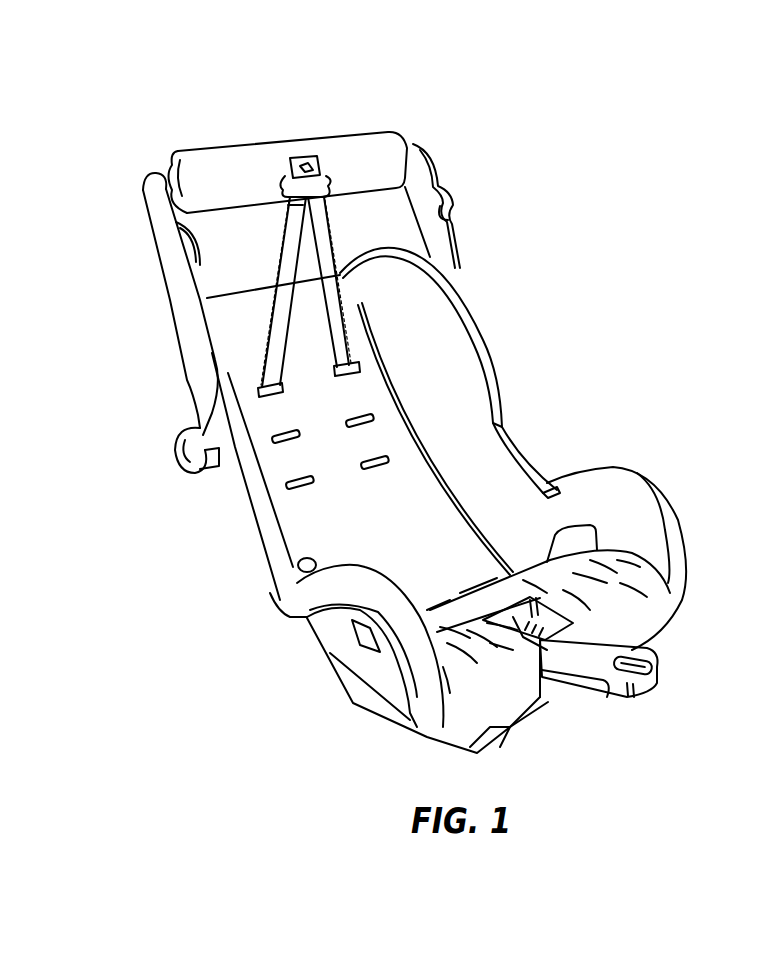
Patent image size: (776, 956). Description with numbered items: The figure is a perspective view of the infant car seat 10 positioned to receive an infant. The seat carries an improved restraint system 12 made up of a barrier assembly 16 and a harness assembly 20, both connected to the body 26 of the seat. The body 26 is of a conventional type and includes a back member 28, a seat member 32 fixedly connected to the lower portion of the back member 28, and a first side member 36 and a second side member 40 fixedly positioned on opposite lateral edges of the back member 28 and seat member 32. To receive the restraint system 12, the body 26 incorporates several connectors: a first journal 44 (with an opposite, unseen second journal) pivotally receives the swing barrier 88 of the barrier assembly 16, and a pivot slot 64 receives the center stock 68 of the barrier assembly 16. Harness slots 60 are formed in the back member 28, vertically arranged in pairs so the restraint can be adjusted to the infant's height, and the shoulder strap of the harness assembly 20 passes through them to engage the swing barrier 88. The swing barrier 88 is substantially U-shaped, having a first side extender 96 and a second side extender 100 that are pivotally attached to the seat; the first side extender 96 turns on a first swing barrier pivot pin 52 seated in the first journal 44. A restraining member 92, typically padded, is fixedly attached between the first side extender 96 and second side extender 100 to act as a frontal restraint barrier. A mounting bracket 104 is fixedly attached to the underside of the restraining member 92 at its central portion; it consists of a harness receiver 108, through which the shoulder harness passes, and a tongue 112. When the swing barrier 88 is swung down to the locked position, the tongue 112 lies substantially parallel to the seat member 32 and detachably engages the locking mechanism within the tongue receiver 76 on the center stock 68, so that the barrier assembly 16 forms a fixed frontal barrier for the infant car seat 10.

The infant car seat 10 is at (392, 114).
The restraint system 12 is at (360, 290).
The barrier assembly 16 is at (449, 165).
The harness assembly 20 is at (336, 212).
The body 26 is at (320, 652).
The back member 28 is at (440, 504).
The seat member 32 is at (513, 583).
The first side member 36 is at (290, 600).
The second side member 40 is at (480, 372).
The first journal 44 is at (198, 475).
The first swing barrier pivot pin 52 is at (180, 455).
The harness slots 60 is at (380, 420).
The pivot slot 64 is at (545, 612).
The center stock 68 is at (593, 683).
The tongue receiver 76 is at (655, 665).
The swing barrier 88 is at (168, 158).
The restraining member 92 is at (222, 150).
The first side extender 96 is at (167, 270).
The second side extender 100 is at (458, 218).
The mounting bracket 104 is at (281, 158).
The harness receiver 108 is at (287, 213).
The tongue 112 is at (317, 152).